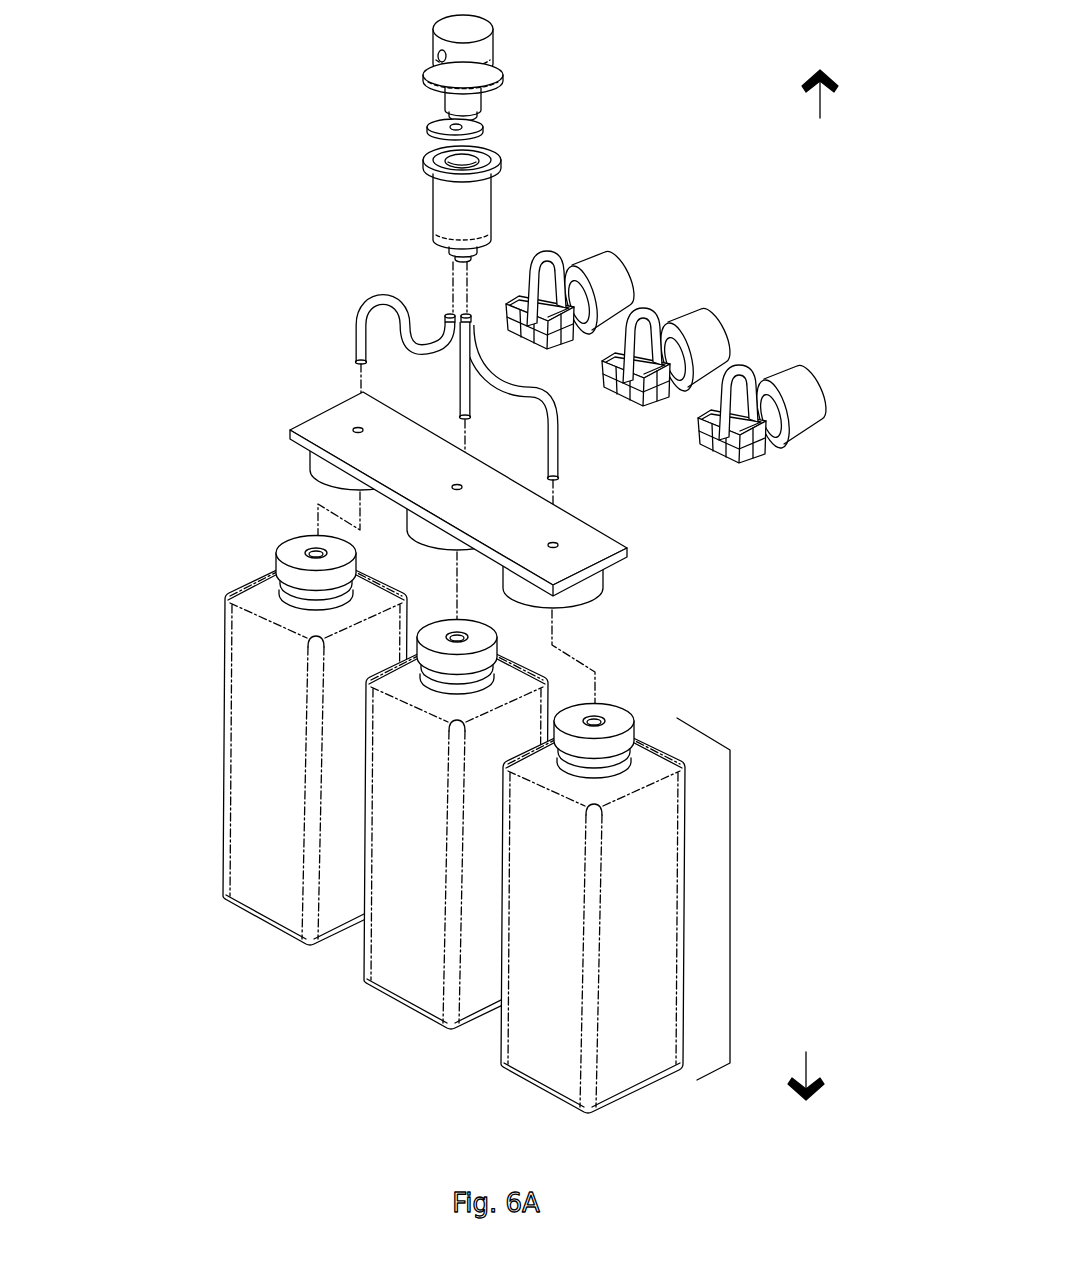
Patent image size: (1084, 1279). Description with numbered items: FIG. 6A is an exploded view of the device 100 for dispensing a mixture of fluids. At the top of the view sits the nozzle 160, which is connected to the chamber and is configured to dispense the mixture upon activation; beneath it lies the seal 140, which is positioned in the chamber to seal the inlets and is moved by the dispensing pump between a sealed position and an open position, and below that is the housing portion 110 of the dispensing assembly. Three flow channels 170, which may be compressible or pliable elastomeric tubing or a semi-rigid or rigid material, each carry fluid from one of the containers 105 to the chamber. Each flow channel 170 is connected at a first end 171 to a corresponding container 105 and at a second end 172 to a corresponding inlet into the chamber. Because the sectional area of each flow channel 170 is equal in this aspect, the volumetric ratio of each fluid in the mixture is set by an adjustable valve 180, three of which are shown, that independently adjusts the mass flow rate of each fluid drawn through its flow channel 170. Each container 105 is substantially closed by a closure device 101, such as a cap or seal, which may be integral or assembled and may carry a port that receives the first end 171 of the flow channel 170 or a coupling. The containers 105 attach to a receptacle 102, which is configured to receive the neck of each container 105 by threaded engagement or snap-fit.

The device 100 is at (174, 88).
The closure device 101 is at (287, 547).
The receptacle 102 is at (317, 459).
The container 105 is at (730, 898).
The filter housing 110 is at (513, 187).
The seal 140 is at (480, 127).
The nozzle 160 is at (406, 37).
The flow channel 170 is at (429, 312).
The first end 171 is at (342, 356).
The second end 172 is at (447, 318).
The adjustable valve 180 is at (618, 243).